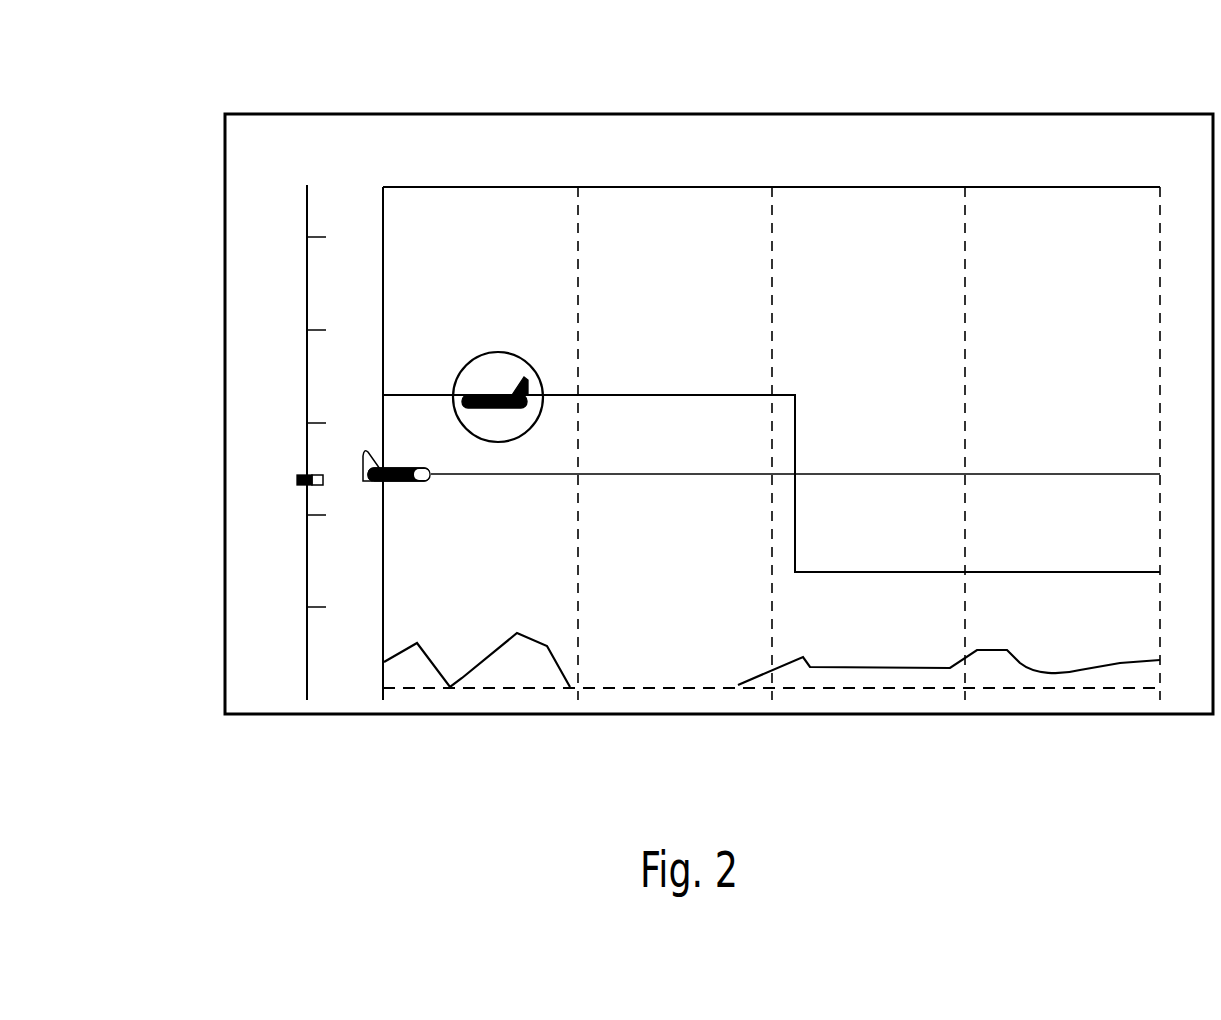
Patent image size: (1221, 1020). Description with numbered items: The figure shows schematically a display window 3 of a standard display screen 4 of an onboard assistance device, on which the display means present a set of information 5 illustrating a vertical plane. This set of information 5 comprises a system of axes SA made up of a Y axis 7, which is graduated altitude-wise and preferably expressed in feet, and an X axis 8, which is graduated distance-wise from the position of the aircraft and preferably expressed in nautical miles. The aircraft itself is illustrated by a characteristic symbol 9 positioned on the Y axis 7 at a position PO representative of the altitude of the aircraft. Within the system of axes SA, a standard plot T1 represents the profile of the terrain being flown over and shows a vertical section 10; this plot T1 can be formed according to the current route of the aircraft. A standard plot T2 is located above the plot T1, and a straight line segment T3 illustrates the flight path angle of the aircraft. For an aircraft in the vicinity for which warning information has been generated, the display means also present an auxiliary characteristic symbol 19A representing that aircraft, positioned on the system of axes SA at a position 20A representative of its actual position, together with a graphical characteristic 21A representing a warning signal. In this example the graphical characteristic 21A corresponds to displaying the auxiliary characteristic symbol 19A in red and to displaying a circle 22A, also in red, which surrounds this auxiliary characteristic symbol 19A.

The display window 3 is at (915, 114).
The display screen 4 is at (192, 359).
The set of information 5 is at (711, 213).
The Y axis 7 is at (258, 218).
The X axis 8 is at (496, 160).
The characteristic symbol 9 is at (397, 482).
The vertical section 10 is at (474, 698).
The auxiliary characteristic symbol 19A is at (487, 395).
The position 20A is at (545, 363).
The graphical characteristic 21A is at (490, 455).
The circle 22A is at (542, 410).
The position PO is at (400, 444).
The system of axes SA is at (336, 687).
The plot T1 is at (483, 660).
The plot T2 is at (796, 425).
The straight line segment T3 is at (860, 477).